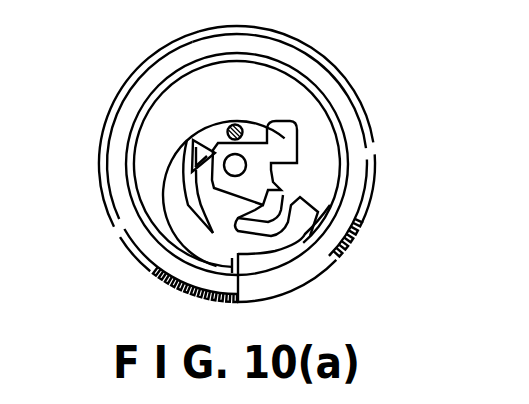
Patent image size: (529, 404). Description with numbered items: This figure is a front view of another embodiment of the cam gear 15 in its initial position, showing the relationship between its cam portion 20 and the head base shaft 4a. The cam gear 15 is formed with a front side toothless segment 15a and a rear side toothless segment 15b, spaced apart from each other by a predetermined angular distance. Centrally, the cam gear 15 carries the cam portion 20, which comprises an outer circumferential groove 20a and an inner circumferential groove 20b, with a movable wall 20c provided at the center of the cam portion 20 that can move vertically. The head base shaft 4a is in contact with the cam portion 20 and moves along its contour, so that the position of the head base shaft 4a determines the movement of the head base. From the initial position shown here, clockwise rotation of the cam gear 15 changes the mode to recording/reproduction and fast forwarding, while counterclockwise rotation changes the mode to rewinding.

The cam gear 15 is at (110, 222).
The front side toothless segment 15a is at (303, 278).
The rear side toothless segment 15b is at (345, 95).
The cam portion 20 is at (452, 172).
The outer circumferential groove 20a is at (305, 218).
The inner circumferential groove 20b is at (283, 184).
The movable wall 20c is at (192, 140).
The head base shaft 4a is at (242, 127).